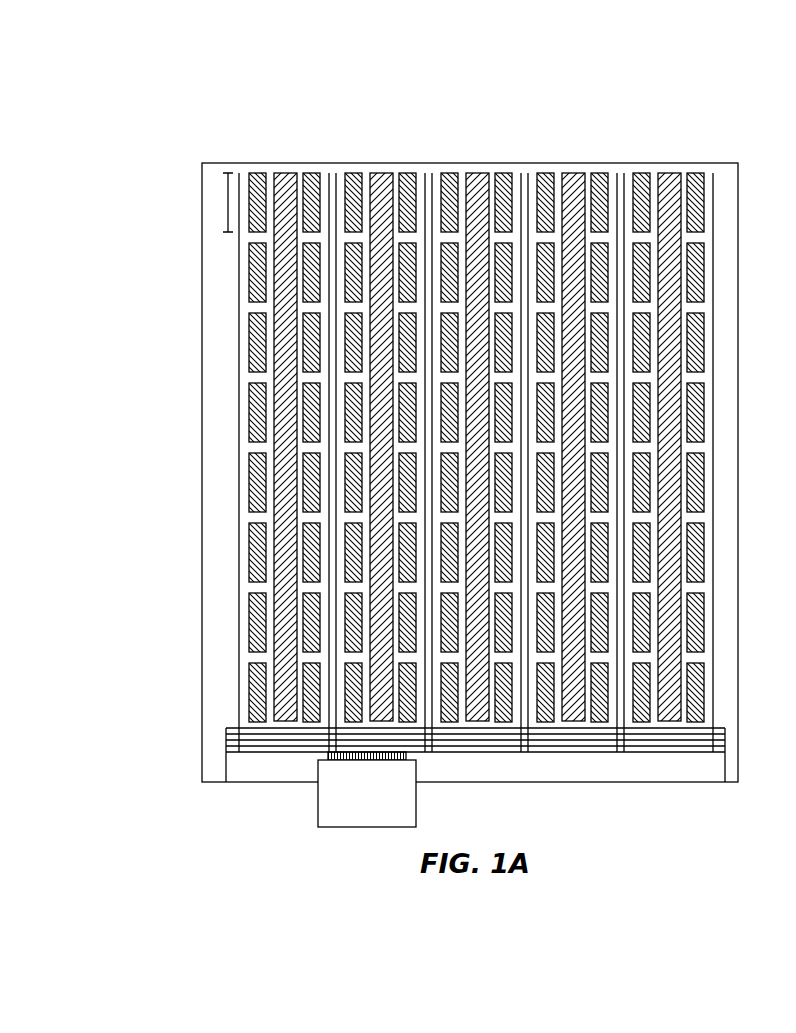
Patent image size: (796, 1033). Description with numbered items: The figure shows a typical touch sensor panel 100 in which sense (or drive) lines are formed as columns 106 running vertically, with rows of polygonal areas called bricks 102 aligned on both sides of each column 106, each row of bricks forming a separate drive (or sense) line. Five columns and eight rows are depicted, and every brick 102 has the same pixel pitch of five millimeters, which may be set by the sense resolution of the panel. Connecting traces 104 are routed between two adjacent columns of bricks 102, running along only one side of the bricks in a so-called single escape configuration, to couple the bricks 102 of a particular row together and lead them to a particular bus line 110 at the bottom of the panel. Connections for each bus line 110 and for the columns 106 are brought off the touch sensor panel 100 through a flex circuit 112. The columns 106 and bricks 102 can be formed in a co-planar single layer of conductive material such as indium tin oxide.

The touch sensor panel 100 is at (163, 150).
The bricks 102 is at (697, 175).
The connecting traces 104 is at (333, 175).
The columns 106 is at (733, 141).
The bus line 110 is at (558, 762).
The flex circuit 112 is at (318, 805).